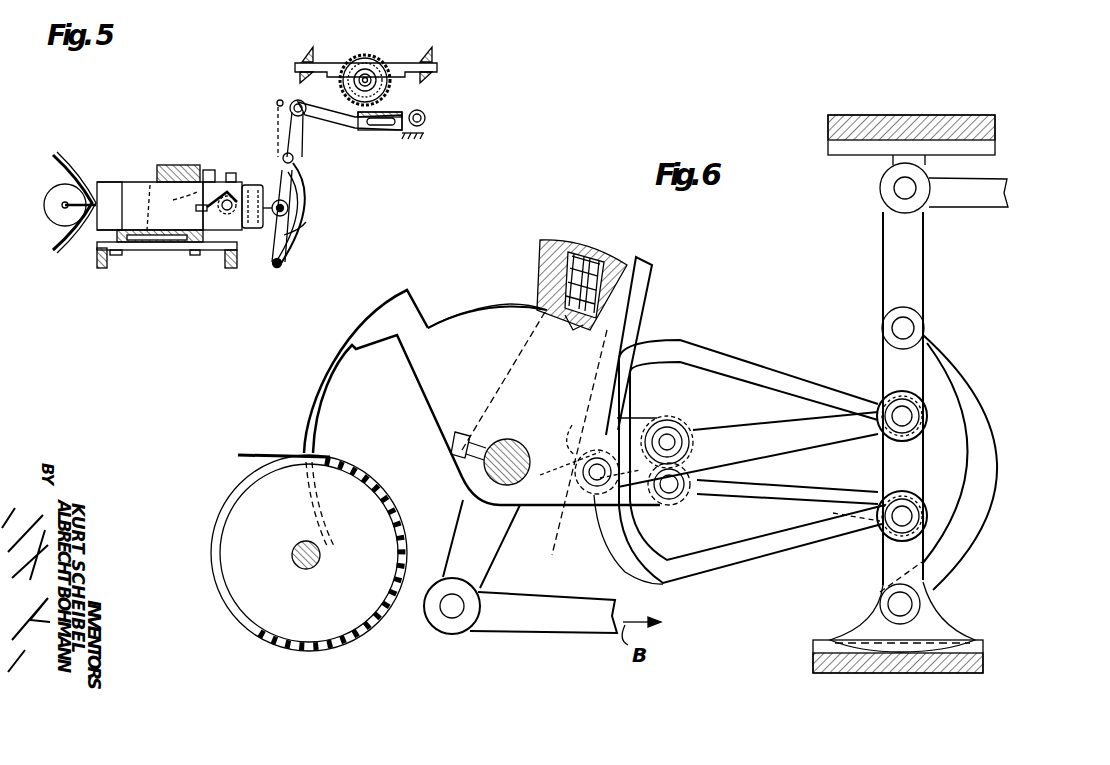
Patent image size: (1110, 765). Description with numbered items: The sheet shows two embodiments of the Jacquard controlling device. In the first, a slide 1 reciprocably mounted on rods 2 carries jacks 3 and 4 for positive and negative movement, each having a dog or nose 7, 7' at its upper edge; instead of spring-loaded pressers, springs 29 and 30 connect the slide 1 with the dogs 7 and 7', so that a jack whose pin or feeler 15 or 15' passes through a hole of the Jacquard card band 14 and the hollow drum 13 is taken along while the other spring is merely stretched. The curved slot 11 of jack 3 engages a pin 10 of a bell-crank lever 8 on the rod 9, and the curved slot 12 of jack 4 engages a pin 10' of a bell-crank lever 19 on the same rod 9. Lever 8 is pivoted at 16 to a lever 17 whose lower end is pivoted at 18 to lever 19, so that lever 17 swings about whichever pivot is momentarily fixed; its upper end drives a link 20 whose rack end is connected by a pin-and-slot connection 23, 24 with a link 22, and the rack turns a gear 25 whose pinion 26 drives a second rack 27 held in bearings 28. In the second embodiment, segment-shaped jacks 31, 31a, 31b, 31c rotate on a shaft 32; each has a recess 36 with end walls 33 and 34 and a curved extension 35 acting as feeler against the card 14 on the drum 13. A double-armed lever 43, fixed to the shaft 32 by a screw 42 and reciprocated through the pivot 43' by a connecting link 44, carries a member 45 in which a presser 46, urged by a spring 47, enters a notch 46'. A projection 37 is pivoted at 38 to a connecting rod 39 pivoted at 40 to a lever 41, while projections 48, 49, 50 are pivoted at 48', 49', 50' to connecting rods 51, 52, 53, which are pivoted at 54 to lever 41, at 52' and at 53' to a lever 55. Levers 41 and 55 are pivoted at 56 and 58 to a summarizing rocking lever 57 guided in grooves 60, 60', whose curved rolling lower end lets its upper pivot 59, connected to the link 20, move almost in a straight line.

In FIG. 5, the slide 1 is at (173, 250).
In FIG. 5, the rods 2 is at (150, 243).
In FIG. 5, the jack 3 is at (128, 190).
In FIG. 5, the jack 4 is at (256, 230).
In FIG. 5, the dog or nose 7 is at (208, 156).
In FIG. 5, the dog or nose 7' is at (237, 156).
In FIG. 5, the bell-crank lever 8 is at (286, 169).
In FIG. 5, the rod 9 is at (289, 209).
In FIG. 5, the pin 10 is at (239, 168).
In FIG. 5, the pin 10' is at (222, 251).
In FIG. 5, the curved slot 11 is at (200, 218).
In FIG. 5, the curved slot 12 is at (234, 215).
In FIG. 5, the hollow drum 13 is at (66, 222).
In FIG. 6, the hollow drum 13 is at (238, 525).
In FIG. 5, the Jacquard card band 14 is at (63, 170).
In FIG. 6, the Jacquard card band 14 is at (262, 457).
In FIG. 5, the pin or feeler 15 is at (104, 180).
In FIG. 5, the pin or feeler 15' is at (104, 275).
In FIG. 5, the pivot 16 is at (300, 159).
In FIG. 5, the lever 17 is at (304, 190).
In FIG. 5, the pivot 18 is at (277, 268).
In FIG. 5, the bell-crank lever 19 is at (303, 237).
In FIG. 5, the link 20 is at (326, 117).
In FIG. 6, the link 20 is at (990, 191).
In FIG. 5, the link 22 is at (414, 128).
In FIG. 5, the pin-and-slot connection 23 is at (366, 131).
In FIG. 5, the pin-and-slot connection 24 is at (383, 131).
In FIG. 5, the gear 25 is at (390, 92).
In FIG. 5, the pinion 26 is at (368, 58).
In FIG. 5, the rack 27 is at (335, 64).
In FIG. 5, the bearings 28 is at (433, 53).
In FIG. 5, the spring 29 is at (176, 202).
In FIG. 5, the spring 30 is at (220, 172).
In FIG. 6, the jack 31 is at (462, 330).
In FIG. 6, the jack 31a is at (463, 292).
In FIG. 6, the jack 31b is at (485, 292).
In FIG. 6, the jack 31c is at (504, 301).
In FIG. 6, the shaft 32 is at (510, 485).
In FIG. 6, the end wall 33 is at (640, 300).
In FIG. 6, the end wall 34 is at (372, 332).
In FIG. 6, the curved extension 35 is at (326, 377).
In FIG. 6, the recess 36 is at (508, 310).
In FIG. 6, the projection 37 is at (606, 480).
In FIG. 6, the pivot 38 is at (593, 480).
In FIG. 6, the connecting rod 39 is at (800, 540).
In FIG. 6, the pivot 40 is at (906, 517).
In FIG. 6, the lever 41 is at (910, 462).
In FIG. 6, the screw 42 is at (455, 449).
In FIG. 6, the lever 43 is at (470, 540).
In FIG. 6, the pivot 43' is at (451, 620).
In FIG. 6, the connecting link 44 is at (542, 624).
In FIG. 6, the member or engaging means 45 is at (580, 248).
In FIG. 6, the presser 46 is at (579, 268).
In FIG. 6, the notch 46' is at (569, 435).
In FIG. 6, the spring 47 is at (603, 275).
In FIG. 6, the projection 48 is at (667, 424).
In FIG. 6, the pivot 48' is at (695, 417).
In FIG. 6, the projection 49 is at (677, 501).
In FIG. 6, the pivot 49' is at (693, 449).
In FIG. 6, the projection 50 is at (661, 425).
In FIG. 6, the pivot 50' is at (570, 437).
In FIG. 6, the connecting rod 51 is at (768, 438).
In FIG. 6, the connecting rod 52 is at (788, 495).
In FIG. 6, the pivot 52' is at (988, 516).
In FIG. 6, the connecting rod 53 is at (748, 415).
In FIG. 6, the pivot 53' is at (988, 416).
In FIG. 6, the pivot 54 is at (906, 416).
In FIG. 6, the lever 55 is at (897, 371).
In FIG. 6, the pivot 56 is at (906, 605).
In FIG. 6, the rocking lever 57 is at (980, 497).
In FIG. 6, the pivot 58 is at (900, 333).
In FIG. 6, the pivot 59 is at (900, 190).
In FIG. 6, the groove 60 is at (938, 656).
In FIG. 6, the groove 60' is at (886, 135).